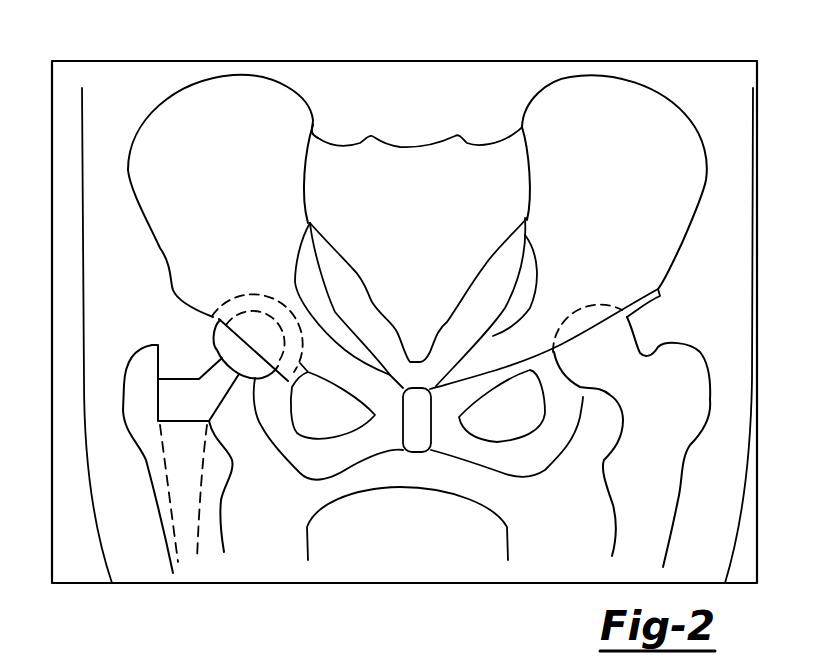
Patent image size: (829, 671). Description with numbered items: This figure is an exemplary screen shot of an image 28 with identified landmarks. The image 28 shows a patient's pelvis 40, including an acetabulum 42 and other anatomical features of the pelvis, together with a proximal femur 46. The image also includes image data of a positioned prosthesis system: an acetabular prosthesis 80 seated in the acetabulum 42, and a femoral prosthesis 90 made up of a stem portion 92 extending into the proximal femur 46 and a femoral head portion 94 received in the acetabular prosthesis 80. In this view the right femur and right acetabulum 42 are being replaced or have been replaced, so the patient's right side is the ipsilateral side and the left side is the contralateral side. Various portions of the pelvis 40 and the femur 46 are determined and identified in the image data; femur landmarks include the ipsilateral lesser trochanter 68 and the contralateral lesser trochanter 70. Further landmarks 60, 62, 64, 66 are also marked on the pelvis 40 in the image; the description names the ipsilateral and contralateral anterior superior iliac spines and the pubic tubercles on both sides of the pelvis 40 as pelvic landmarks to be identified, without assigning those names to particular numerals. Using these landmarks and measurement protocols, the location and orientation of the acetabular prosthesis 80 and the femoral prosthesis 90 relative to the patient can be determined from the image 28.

The image 28 is at (141, 76).
The pelvis 40 is at (557, 100).
The acetabulum 42 is at (266, 280).
The proximal femur 46 is at (232, 524).
The first ilium 60 is at (137, 200).
The second ilium 62 is at (698, 195).
The first ischium 64 is at (380, 422).
The second ischium 66 is at (457, 422).
The ipsilateral lesser trochanter 68 is at (230, 471).
The contralateral lesser trochanter 70 is at (607, 470).
The acetabular prosthesis 80 is at (248, 308).
The femoral prosthesis 90 is at (177, 366).
The stem portion 92 is at (183, 510).
The femoral head portion 94 is at (222, 342).